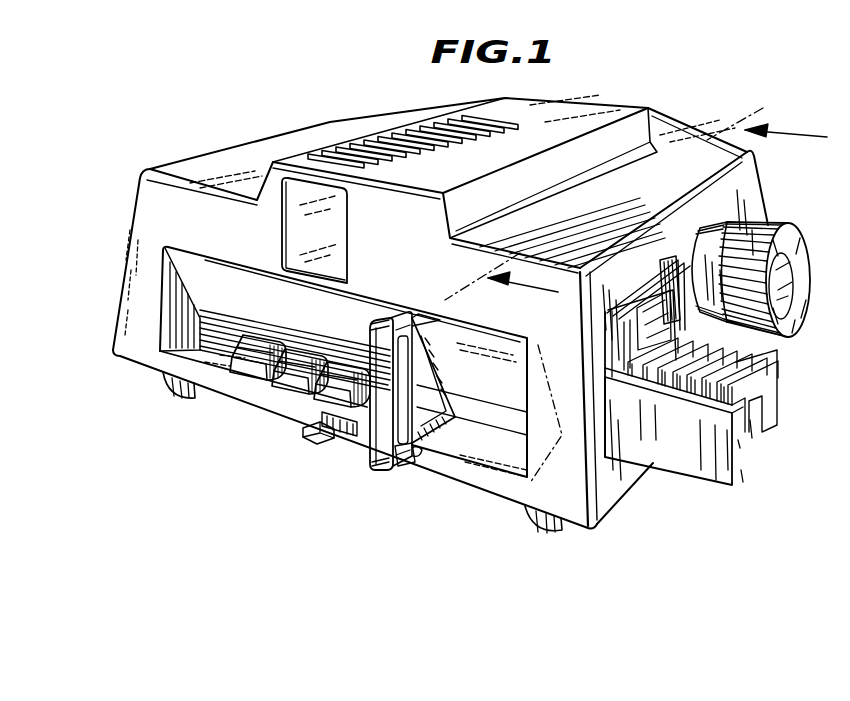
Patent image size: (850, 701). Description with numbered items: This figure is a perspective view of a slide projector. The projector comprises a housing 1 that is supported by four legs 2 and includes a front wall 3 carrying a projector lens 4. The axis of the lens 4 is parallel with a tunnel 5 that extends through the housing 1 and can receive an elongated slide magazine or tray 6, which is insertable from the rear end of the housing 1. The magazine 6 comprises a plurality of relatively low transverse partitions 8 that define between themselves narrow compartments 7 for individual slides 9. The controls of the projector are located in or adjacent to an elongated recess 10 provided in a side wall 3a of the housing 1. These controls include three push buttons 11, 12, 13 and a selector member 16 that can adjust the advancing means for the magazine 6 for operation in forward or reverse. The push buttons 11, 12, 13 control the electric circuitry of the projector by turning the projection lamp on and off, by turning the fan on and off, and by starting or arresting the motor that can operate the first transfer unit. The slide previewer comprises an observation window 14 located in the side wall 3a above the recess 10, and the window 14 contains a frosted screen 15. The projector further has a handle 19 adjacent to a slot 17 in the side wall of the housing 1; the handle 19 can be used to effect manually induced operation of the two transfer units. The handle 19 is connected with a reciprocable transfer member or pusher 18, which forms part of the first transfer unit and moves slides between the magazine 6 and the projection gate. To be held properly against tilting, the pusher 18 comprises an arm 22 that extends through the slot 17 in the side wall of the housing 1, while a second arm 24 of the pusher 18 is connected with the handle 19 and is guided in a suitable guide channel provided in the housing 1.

The housing 1 is at (672, 147).
The legs 2 is at (163, 388).
The front wall 3 is at (750, 199).
The side wall 3a is at (150, 210).
The projector lens 4 is at (790, 283).
The tunnel 5 is at (665, 265).
The slide magazine 6 is at (686, 462).
The compartments 7 is at (659, 383).
The transverse partitions 8 is at (745, 350).
The slides 9 is at (631, 298).
The recess 10 is at (166, 278).
The push button 11 is at (246, 370).
The push button 12 is at (284, 386).
The push button 13 is at (322, 398).
The observation window 14 is at (281, 235).
The frosted screen 15 is at (333, 240).
The selector member 16 is at (320, 441).
The slot 17 is at (438, 428).
The pusher 18 is at (374, 484).
The handle 19 is at (404, 472).
The arm 22 is at (418, 318).
The second arm 24 is at (415, 458).